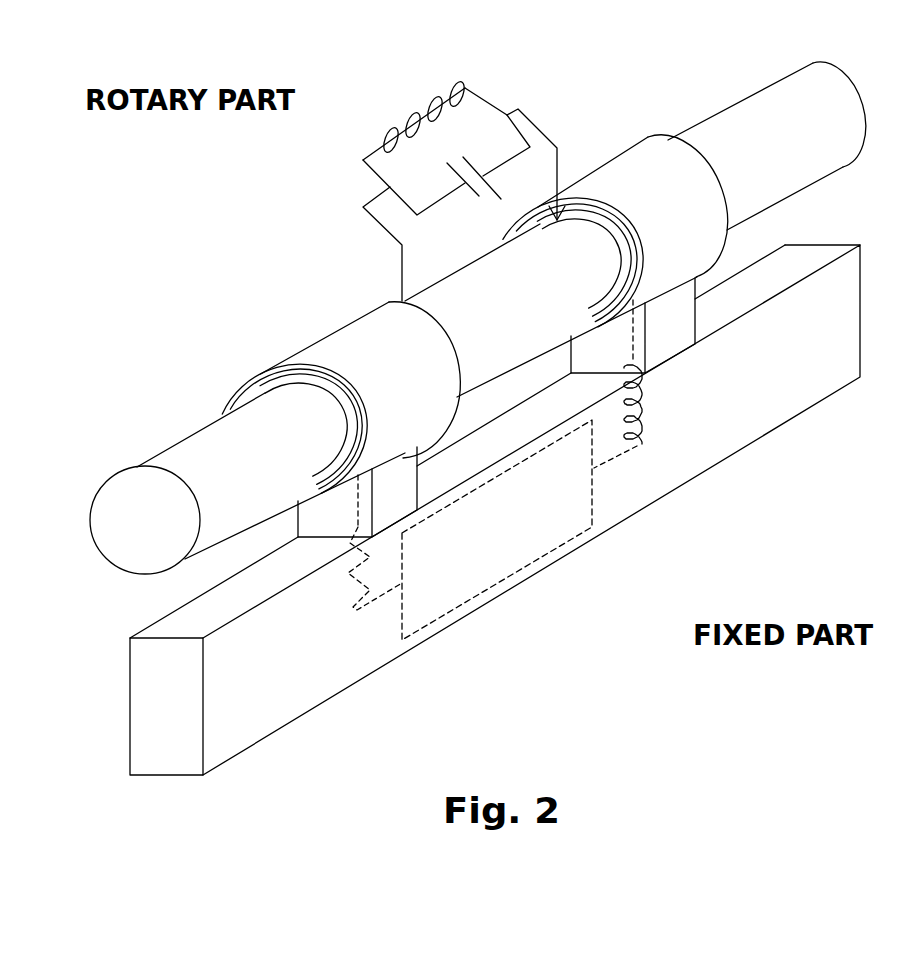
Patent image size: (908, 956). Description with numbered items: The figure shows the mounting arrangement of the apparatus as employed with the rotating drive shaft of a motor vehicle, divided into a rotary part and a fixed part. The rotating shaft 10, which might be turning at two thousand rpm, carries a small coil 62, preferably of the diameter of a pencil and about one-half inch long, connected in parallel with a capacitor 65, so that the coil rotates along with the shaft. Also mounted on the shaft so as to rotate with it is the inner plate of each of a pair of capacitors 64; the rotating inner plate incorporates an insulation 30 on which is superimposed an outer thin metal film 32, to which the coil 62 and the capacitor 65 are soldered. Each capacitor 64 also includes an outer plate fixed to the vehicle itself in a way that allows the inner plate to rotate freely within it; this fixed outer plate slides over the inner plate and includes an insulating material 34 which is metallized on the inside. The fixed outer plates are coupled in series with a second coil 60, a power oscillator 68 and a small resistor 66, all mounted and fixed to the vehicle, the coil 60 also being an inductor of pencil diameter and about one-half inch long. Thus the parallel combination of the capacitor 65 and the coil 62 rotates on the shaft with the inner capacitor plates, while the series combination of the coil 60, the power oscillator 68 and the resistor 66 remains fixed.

The rotating shaft 10 is at (821, 84).
The insulation 30 is at (347, 436).
The outer thin metal film 32 is at (250, 378).
The insulating material 34 is at (367, 323).
The second coil 60 is at (645, 384).
The coil 62 is at (415, 120).
The capacitor 64 is at (557, 266).
The capacitor 65 is at (472, 197).
The resistor 66 is at (355, 542).
The power oscillator 68 is at (402, 615).